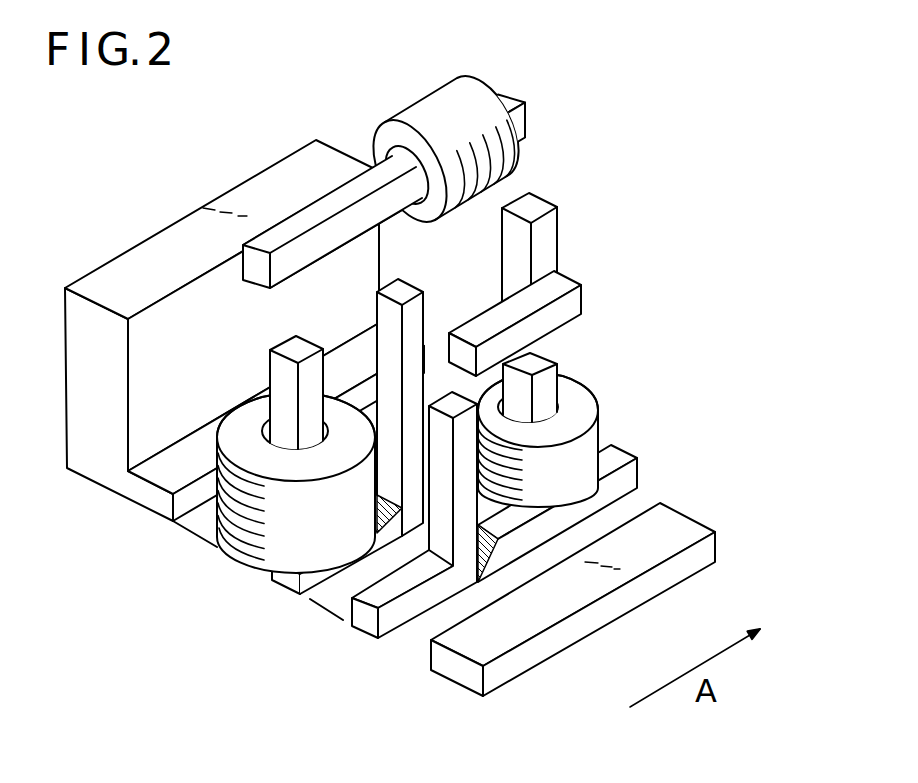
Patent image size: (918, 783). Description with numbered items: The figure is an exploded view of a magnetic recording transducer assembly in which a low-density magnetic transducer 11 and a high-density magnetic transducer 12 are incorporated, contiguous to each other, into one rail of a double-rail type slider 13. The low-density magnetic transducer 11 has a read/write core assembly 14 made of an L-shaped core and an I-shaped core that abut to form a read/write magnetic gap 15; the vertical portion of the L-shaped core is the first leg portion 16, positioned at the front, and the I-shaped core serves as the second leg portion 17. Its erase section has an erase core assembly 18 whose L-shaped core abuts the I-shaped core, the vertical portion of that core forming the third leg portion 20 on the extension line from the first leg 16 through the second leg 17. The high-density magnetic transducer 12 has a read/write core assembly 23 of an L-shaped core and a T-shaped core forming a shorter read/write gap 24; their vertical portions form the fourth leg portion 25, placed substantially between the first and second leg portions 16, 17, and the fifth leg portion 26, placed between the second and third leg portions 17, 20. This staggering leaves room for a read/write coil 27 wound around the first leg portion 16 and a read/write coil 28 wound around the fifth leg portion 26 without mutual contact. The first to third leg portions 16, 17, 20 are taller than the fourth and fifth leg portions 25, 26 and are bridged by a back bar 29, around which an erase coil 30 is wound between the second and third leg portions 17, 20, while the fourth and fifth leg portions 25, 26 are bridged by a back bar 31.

The low-density magnetic transducer 11 is at (570, 213).
The high-density magnetic transducer 12 is at (369, 645).
The double-rail type slider 13 is at (92, 452).
The read/write core assembly 14 is at (311, 577).
The read/write magnetic gap 15 is at (378, 533).
The first leg portion 16 is at (226, 436).
The second leg portion 17 is at (408, 279).
The erase core assembly 18 is at (568, 335).
The third leg portion 20 is at (535, 207).
The read/write core assembly 23 is at (573, 518).
The read/write gap 24 is at (478, 582).
The fourth leg portion 25 is at (453, 391).
The fifth leg portion 26 is at (560, 370).
The read/write coil 27 is at (285, 548).
The read/write coil 28 is at (585, 443).
The back bar 29 is at (313, 207).
The erase coil 30 is at (460, 100).
The back bar 31 is at (563, 280).